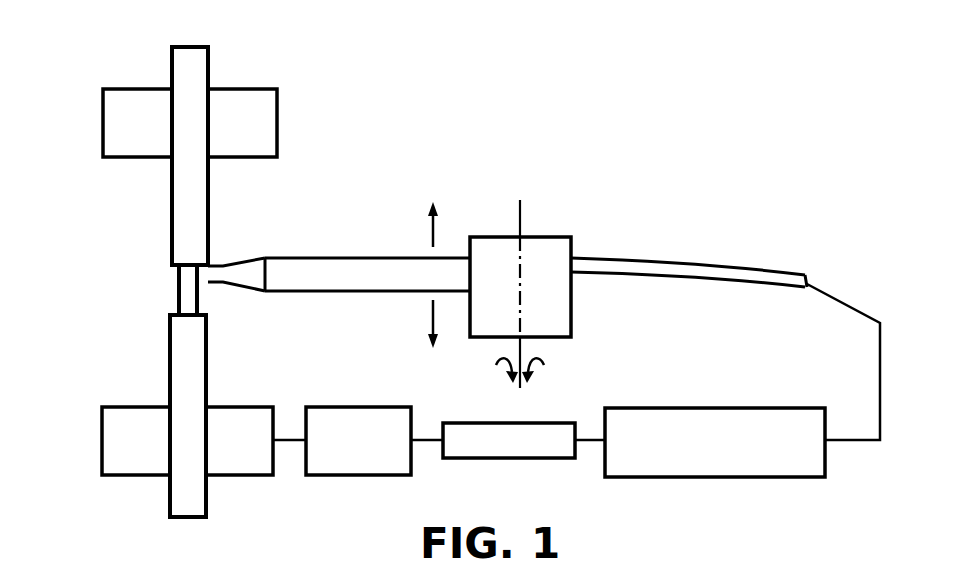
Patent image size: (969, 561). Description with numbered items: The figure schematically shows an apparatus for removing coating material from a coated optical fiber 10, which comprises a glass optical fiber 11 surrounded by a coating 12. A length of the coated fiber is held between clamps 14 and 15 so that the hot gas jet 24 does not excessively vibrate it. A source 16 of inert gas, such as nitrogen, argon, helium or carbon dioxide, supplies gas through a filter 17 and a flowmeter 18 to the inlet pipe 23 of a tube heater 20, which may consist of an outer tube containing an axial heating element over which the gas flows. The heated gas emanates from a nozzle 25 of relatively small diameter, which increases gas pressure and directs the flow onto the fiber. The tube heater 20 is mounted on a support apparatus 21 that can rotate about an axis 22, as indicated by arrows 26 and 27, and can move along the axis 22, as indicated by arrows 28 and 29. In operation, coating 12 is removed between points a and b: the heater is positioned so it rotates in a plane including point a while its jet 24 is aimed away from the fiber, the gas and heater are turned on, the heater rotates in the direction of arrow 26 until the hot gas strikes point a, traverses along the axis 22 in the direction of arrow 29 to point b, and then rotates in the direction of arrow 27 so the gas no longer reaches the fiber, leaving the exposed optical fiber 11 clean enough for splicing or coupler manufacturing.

The coated optical fiber 10 is at (216, 61).
The glass optical fiber 11 is at (207, 277).
The coating 12 is at (172, 195).
The clamp 14 is at (117, 118).
The clamp 15 is at (119, 413).
The source of inert gas 16 is at (364, 476).
The filter 17 is at (512, 458).
The flowmeter 18 is at (697, 408).
The tube heater 20 is at (327, 259).
The support apparatus 21 is at (562, 237).
The axis 22 is at (519, 226).
The inlet pipe 23 is at (690, 262).
The hot gas jet 24 is at (218, 283).
The nozzle 25 is at (218, 266).
The arrow 26 is at (544, 365).
The arrow 27 is at (496, 365).
The arrow 28 is at (430, 315).
The arrow 29 is at (430, 225).
The point a is at (171, 315).
The point b is at (174, 268).